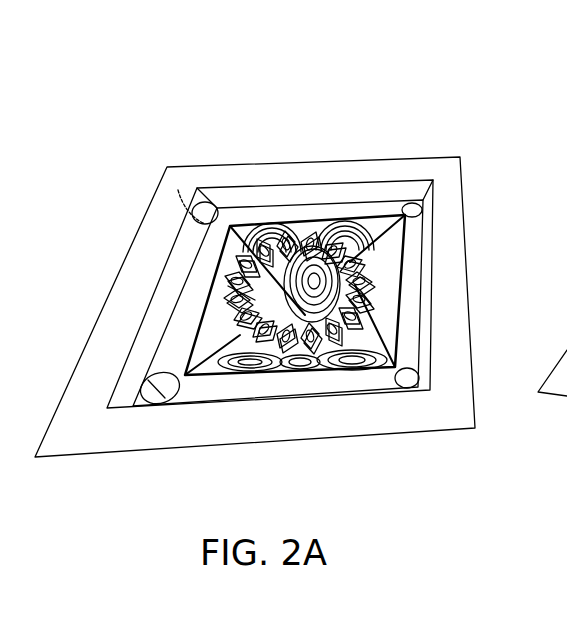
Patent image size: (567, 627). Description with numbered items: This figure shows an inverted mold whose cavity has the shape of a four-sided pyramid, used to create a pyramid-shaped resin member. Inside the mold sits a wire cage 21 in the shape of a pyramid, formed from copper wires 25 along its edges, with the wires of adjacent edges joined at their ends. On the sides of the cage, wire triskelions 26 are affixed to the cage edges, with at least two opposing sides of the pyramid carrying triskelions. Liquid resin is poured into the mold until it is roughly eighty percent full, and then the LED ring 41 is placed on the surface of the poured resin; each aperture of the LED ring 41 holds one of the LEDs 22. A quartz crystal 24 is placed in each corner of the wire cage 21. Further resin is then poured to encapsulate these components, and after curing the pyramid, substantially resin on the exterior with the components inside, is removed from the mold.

The wire cage 21 is at (232, 222).
The LEDs 22 is at (224, 282).
The quartz crystal 24 is at (207, 222).
The copper wires 25 is at (380, 252).
The triskelions 26 is at (362, 226).
The LED ring 41 is at (375, 312).